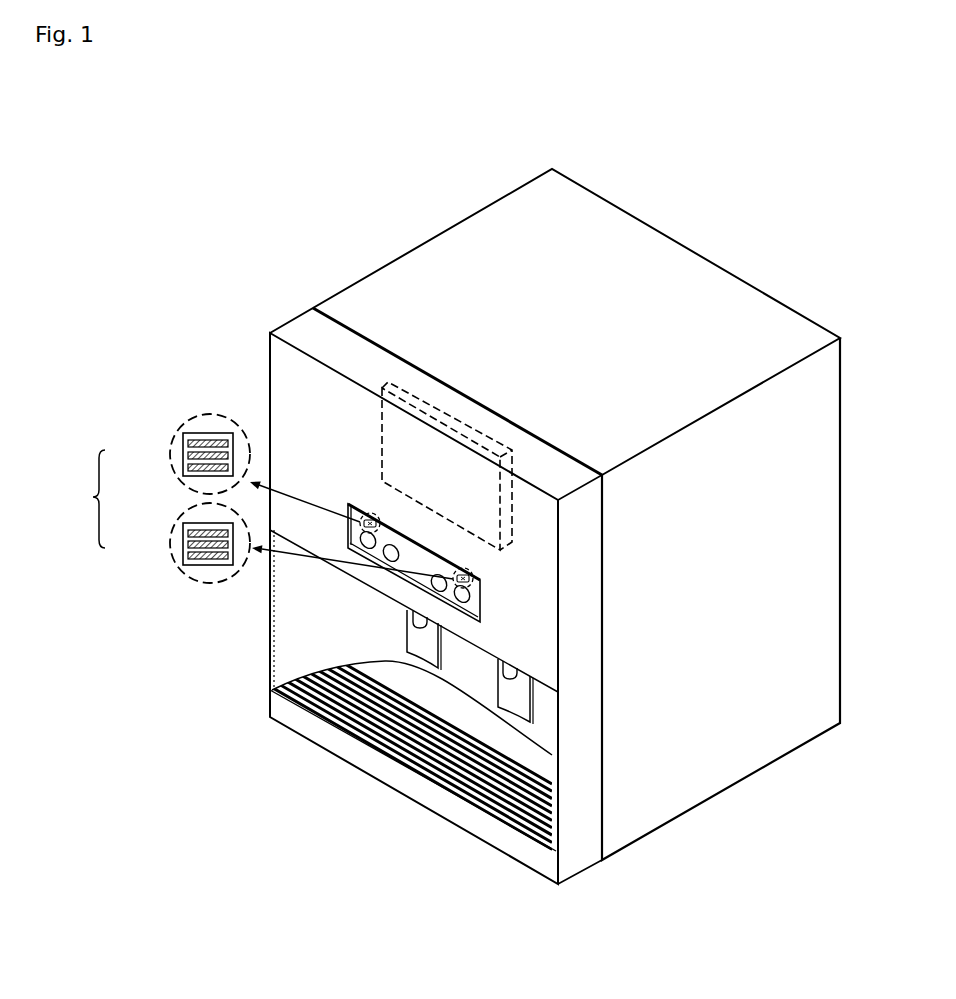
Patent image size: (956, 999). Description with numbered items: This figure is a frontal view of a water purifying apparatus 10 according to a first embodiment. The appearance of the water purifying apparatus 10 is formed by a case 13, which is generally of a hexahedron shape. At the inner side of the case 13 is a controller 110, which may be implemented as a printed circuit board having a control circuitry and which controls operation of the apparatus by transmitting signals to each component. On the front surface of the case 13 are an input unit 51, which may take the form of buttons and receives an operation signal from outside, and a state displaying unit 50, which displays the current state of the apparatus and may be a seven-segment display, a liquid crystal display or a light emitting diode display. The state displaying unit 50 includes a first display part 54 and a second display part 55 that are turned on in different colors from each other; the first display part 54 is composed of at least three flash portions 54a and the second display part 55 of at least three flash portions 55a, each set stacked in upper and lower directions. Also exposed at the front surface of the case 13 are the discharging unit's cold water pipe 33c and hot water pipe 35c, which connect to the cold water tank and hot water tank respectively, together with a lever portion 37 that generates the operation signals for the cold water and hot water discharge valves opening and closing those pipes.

The water purifying apparatus 10 is at (312, 180).
The case 13 is at (302, 325).
The controller 110 is at (372, 435).
The state displaying unit 50 is at (156, 498).
The input unit 51 is at (432, 587).
The first display part 54 is at (185, 455).
The flash portion 54a is at (186, 443).
The second display part 55 is at (185, 533).
The flash portion 55a is at (186, 556).
The hot water pipe 35c is at (404, 613).
The lever portion 37 is at (417, 633).
The cold water pipe 33c is at (503, 662).